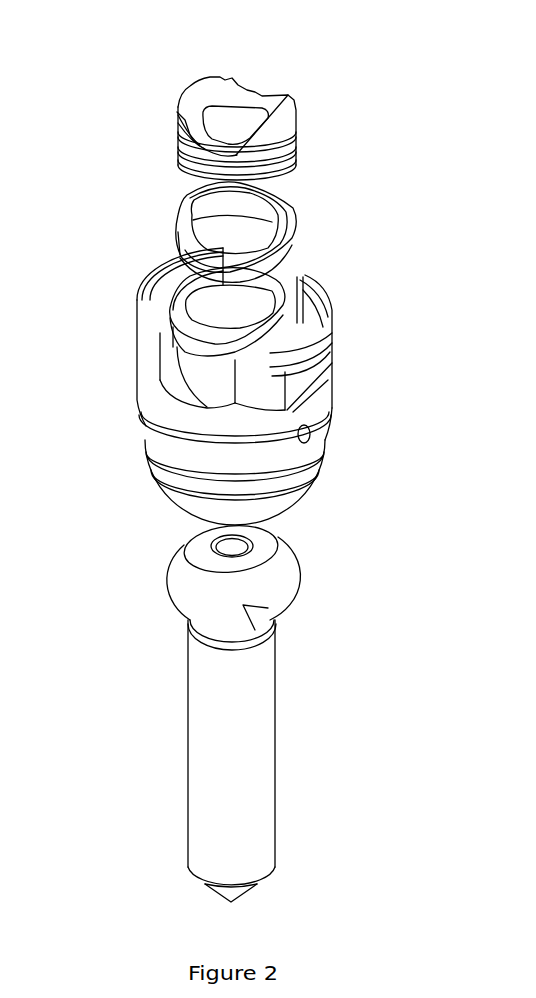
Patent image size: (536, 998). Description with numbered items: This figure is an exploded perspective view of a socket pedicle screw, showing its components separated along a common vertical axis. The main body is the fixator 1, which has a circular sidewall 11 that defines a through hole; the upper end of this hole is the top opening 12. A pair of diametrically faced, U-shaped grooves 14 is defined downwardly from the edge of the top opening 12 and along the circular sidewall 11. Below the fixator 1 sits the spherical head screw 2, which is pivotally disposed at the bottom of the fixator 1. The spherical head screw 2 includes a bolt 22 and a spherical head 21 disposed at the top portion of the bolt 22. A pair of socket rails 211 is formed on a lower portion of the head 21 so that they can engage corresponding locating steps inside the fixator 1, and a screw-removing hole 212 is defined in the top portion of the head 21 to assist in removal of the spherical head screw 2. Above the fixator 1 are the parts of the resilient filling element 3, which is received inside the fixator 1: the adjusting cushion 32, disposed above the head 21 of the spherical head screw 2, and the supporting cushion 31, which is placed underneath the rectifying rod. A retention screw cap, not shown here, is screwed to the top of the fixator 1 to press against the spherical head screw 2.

The fixator 1 is at (262, 453).
The circular sidewall 11 is at (145, 378).
The top opening 12 is at (173, 296).
The U-shaped grooves 14 is at (180, 402).
The spherical head screw 2 is at (250, 688).
The spherical head 21 is at (205, 593).
The socket rails 211 is at (262, 608).
The screw-removing hole 212 is at (229, 547).
The bolt 22 is at (213, 739).
The resilient filling element 3 is at (312, 200).
The supporting cushion 31 is at (193, 92).
The adjusting cushion 32 is at (178, 235).